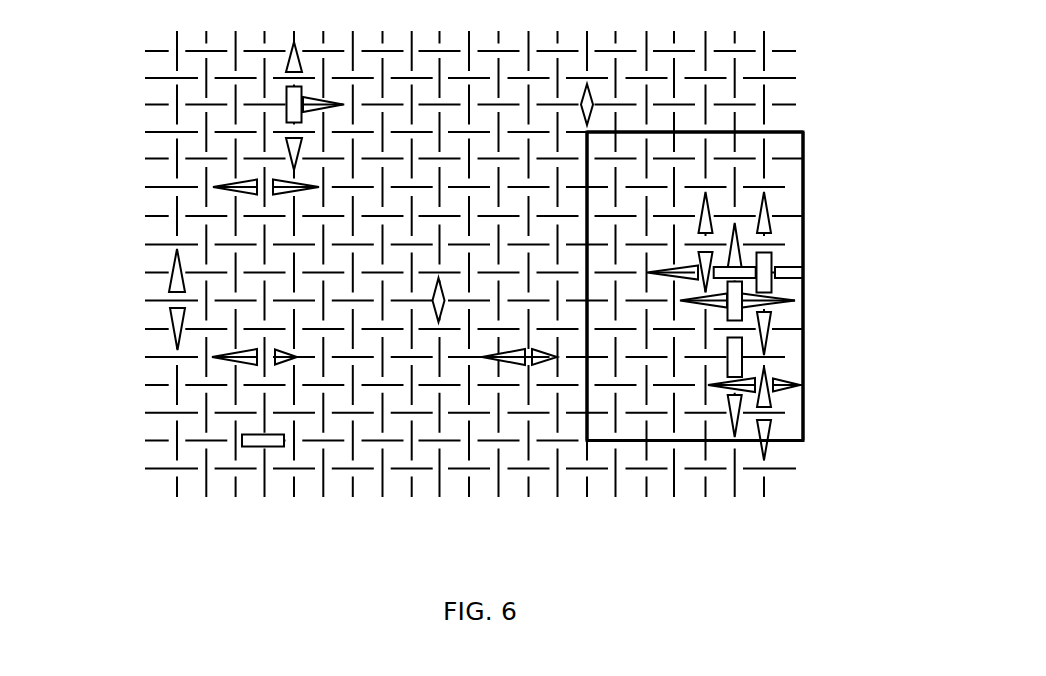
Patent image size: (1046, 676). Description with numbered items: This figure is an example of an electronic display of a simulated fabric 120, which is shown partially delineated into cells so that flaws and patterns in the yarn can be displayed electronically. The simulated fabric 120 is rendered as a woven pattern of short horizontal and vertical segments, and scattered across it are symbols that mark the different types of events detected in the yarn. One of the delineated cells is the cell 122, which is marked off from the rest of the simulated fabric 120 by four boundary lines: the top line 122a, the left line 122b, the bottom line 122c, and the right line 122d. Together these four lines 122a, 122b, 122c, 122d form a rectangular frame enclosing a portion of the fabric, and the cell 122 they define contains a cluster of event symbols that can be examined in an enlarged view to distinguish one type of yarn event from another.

The simulated fabric 120 is at (196, 202).
The cell 122 is at (778, 190).
The line 122a is at (782, 132).
The line 122b is at (587, 358).
The line 122c is at (708, 441).
The line 122d is at (805, 413).